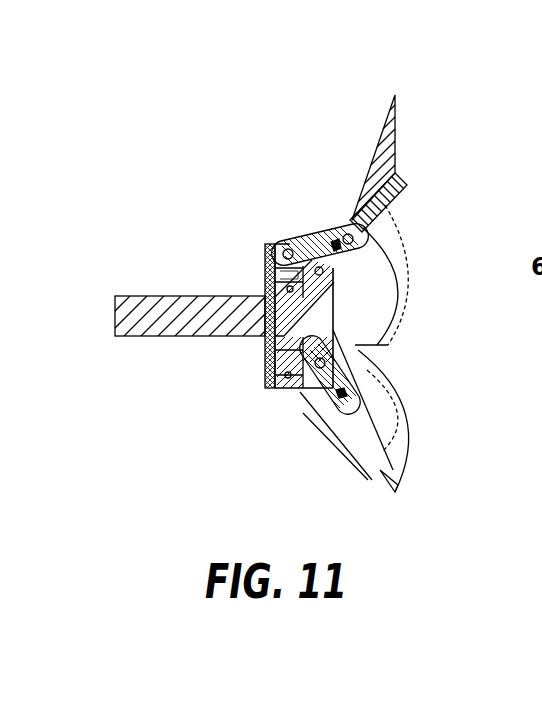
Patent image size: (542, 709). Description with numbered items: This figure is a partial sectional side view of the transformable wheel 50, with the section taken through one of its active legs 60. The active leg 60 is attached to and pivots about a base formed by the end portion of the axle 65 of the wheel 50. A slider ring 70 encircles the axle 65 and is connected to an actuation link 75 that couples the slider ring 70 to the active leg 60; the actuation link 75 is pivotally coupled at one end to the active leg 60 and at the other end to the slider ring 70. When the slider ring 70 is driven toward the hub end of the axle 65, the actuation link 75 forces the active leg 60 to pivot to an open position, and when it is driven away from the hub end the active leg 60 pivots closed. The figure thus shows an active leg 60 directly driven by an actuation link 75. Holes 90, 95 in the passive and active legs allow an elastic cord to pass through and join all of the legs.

The transformable wheel 50 is at (447, 101).
The active leg 60 is at (372, 192).
The axle 65 is at (141, 319).
The slider ring 70 is at (265, 263).
The actuation link 75 is at (314, 240).
The hole 90 is at (325, 397).
The hole 95 is at (336, 245).